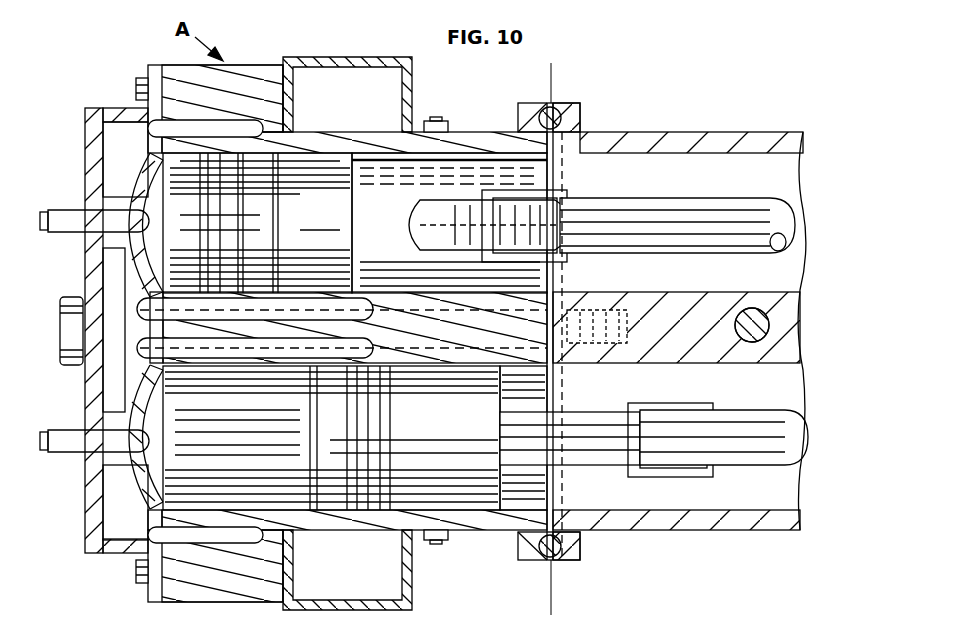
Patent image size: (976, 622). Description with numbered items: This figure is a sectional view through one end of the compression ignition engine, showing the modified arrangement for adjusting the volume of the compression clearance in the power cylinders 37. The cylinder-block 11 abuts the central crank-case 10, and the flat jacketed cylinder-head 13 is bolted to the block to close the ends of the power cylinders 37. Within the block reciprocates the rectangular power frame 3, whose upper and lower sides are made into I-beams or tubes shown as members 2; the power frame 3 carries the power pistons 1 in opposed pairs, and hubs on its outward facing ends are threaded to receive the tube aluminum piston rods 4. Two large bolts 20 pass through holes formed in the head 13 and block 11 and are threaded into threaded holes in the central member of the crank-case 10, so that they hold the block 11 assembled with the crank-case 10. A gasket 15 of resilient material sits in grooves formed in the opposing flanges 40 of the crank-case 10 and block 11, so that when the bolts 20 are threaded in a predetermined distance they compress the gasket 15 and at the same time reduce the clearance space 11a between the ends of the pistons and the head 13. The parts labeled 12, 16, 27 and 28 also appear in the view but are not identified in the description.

The power piston 1 is at (358, 190).
The member 2 is at (675, 198).
The power frame 3 is at (515, 192).
The tube aluminum piston rod 4 is at (440, 200).
The crank-case 10 is at (689, 531).
The cylinder-block 11 is at (558, 75).
The clearance space 11a is at (150, 203).
The cover 12 is at (333, 57).
The cylinder-head 13 is at (86, 490).
The gasket 15 is at (522, 122).
The guide pin 16 is at (68, 210).
The bolt 20 is at (62, 336).
The bolt 27 is at (138, 88).
The bolt 28 is at (745, 306).
The power cylinder 37 is at (326, 211).
The flange 40 is at (522, 108).